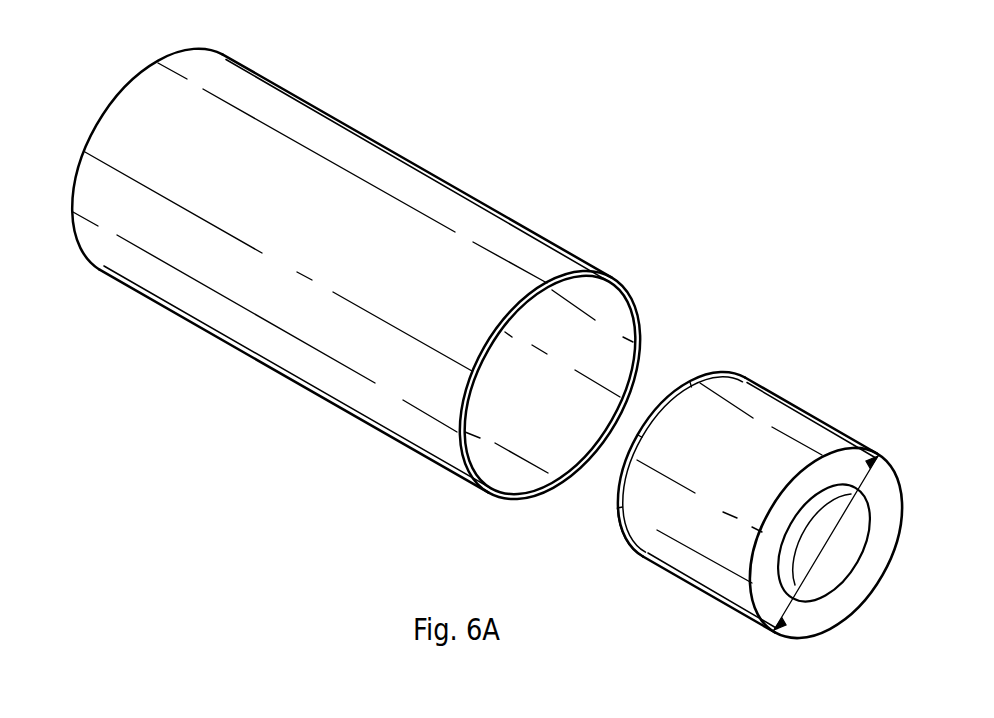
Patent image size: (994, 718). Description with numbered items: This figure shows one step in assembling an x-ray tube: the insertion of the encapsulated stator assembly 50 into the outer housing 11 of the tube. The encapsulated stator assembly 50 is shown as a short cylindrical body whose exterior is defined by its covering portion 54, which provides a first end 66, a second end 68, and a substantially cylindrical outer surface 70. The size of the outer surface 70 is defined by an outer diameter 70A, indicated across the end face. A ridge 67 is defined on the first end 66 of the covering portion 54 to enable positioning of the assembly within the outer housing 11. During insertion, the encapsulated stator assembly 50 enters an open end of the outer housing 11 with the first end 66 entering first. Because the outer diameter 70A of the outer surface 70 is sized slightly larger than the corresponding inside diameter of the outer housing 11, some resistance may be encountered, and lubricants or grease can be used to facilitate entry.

The outer housing 11 is at (310, 122).
The encapsulated stator assembly 50 is at (690, 602).
The covering portion 54 is at (754, 402).
The first end 66 is at (693, 378).
The ridge 67 is at (620, 530).
The second end 68 is at (842, 465).
The outer surface 70 is at (743, 470).
The outer diameter 70A is at (830, 547).